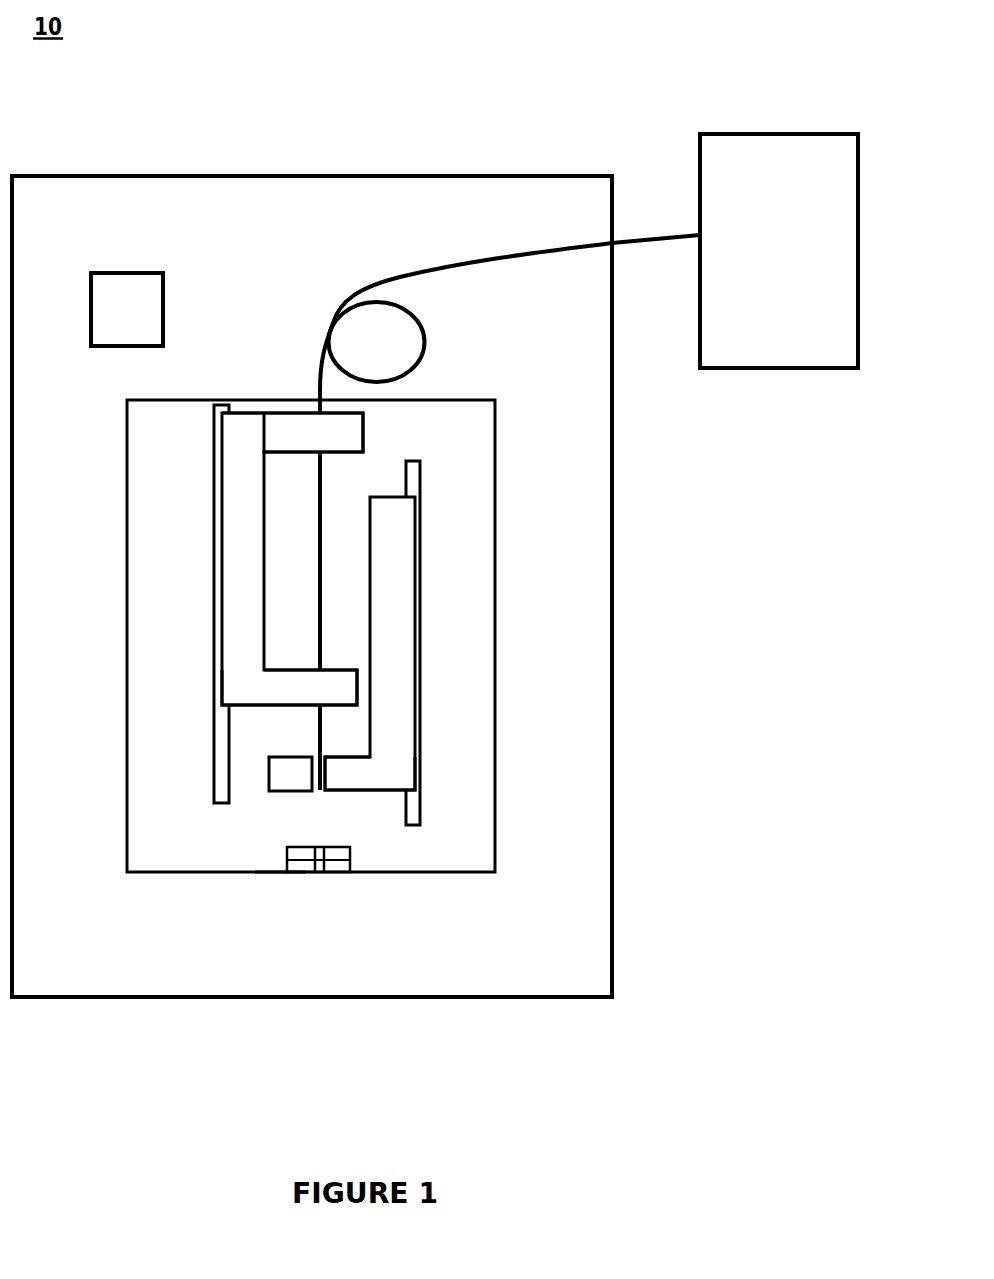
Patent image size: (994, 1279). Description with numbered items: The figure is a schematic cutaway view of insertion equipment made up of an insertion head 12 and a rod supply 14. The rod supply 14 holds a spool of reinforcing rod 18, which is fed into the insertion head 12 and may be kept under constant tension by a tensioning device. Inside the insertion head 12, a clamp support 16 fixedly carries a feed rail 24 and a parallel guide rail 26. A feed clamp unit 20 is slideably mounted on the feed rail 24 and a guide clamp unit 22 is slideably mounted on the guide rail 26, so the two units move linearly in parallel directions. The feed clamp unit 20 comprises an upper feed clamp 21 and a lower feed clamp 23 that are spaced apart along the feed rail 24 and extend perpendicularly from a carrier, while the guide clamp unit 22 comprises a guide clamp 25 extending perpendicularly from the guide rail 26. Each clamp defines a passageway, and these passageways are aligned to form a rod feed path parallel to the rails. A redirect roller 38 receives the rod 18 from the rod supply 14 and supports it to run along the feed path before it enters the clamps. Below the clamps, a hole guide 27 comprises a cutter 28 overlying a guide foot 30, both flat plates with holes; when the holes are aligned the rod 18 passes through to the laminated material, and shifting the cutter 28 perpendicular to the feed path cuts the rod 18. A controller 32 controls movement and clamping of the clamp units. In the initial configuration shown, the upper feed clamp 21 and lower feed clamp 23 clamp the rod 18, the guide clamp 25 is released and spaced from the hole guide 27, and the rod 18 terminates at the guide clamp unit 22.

The insertion head 12 is at (217, 212).
The rod supply 14 is at (760, 167).
The clamp support 16 is at (125, 499).
The reinforcing rod 18 is at (528, 255).
The feed clamp unit 20 is at (256, 542).
The upper feed clamp 21 is at (290, 423).
The guide clamp unit 22 is at (399, 663).
The lower feed clamp 23 is at (285, 683).
The feed rail 24 is at (217, 607).
The guide clamp 25 is at (357, 772).
The guide rail 26 is at (413, 493).
The hole guide 27 is at (281, 872).
The cutter 28 is at (311, 875).
The guide foot 30 is at (347, 865).
The controller 32 is at (125, 305).
The redirect roller 38 is at (397, 338).